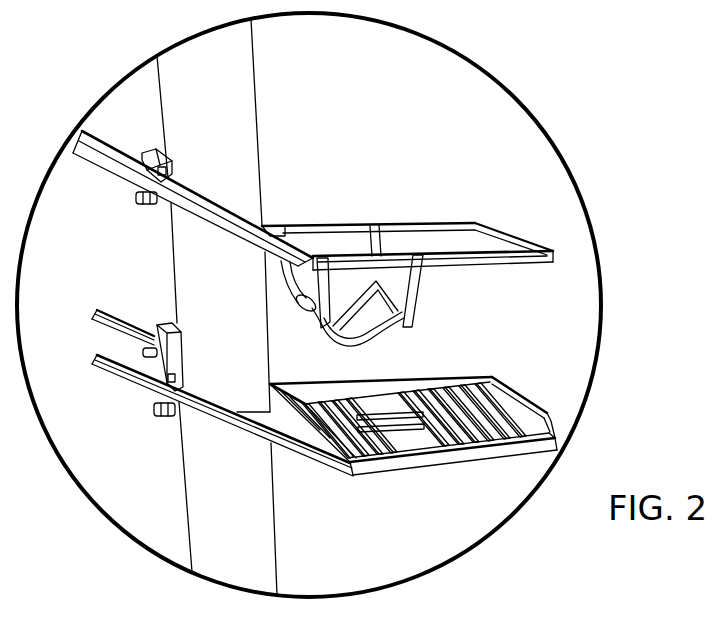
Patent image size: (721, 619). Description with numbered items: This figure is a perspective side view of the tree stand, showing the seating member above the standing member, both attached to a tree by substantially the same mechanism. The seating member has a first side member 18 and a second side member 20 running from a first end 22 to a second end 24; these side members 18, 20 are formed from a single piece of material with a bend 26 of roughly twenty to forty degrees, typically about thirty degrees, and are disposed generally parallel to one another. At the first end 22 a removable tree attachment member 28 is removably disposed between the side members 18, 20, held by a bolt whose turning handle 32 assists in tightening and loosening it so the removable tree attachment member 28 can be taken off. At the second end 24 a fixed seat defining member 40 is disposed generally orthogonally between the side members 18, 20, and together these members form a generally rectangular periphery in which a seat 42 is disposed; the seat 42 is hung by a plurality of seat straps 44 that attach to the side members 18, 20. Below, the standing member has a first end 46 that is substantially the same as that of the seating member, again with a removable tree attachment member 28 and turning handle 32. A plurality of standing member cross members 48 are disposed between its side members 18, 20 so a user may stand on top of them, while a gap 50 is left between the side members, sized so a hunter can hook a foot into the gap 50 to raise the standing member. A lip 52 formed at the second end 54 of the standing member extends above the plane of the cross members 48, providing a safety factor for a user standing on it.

The first side member 18 is at (427, 228).
The second side member 20 is at (452, 262).
The first end 22 is at (72, 166).
The second end 24 is at (526, 280).
The bend 26 is at (302, 258).
The removable tree attachment member 28 is at (151, 154).
The turning handle 32 is at (138, 196).
The fixed seat defining member 40 is at (507, 240).
The seat 42 is at (372, 339).
The seat straps 44 is at (317, 311).
The first end 46 is at (94, 384).
The standing member cross members 48 is at (341, 400).
The gap 50 is at (398, 447).
The lip 52 is at (516, 393).
The second end 54 is at (560, 445).